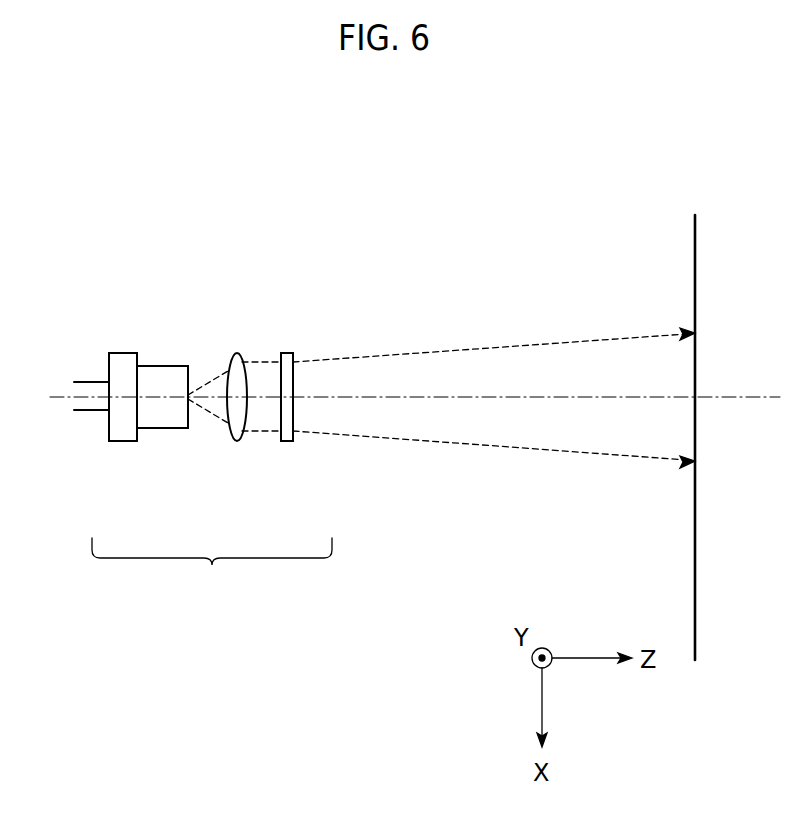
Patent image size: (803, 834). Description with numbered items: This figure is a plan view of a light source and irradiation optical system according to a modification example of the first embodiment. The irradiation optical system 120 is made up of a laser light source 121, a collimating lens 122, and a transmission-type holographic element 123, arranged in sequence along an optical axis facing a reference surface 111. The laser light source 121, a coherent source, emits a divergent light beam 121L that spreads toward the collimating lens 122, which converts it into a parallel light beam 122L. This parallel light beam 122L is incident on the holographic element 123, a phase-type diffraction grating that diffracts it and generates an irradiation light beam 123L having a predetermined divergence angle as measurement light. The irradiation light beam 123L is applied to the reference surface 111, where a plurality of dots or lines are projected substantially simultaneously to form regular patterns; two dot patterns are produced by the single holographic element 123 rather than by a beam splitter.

The reference surface 111 is at (695, 263).
The irradiation optical system 120 is at (233, 602).
The laser light source 121 is at (127, 441).
The collimating lens 122 is at (237, 441).
The transmission-type holographic element 123 is at (291, 441).
The divergent light beam 121L is at (207, 378).
The parallel light beam 122L is at (270, 361).
The irradiation light beam 123L is at (383, 356).